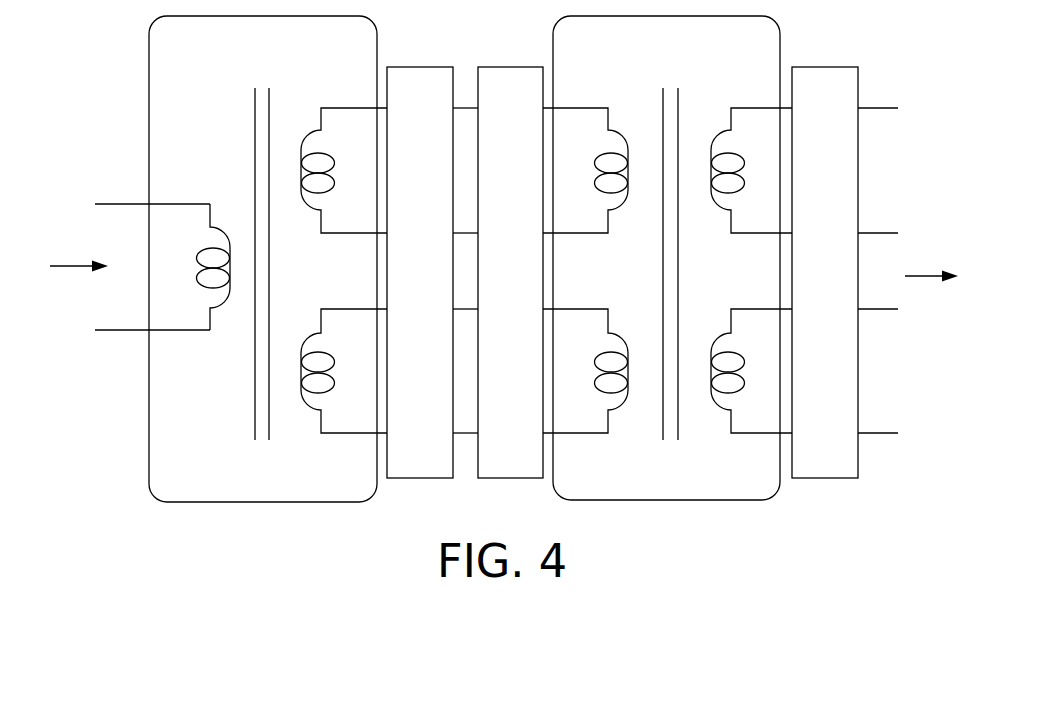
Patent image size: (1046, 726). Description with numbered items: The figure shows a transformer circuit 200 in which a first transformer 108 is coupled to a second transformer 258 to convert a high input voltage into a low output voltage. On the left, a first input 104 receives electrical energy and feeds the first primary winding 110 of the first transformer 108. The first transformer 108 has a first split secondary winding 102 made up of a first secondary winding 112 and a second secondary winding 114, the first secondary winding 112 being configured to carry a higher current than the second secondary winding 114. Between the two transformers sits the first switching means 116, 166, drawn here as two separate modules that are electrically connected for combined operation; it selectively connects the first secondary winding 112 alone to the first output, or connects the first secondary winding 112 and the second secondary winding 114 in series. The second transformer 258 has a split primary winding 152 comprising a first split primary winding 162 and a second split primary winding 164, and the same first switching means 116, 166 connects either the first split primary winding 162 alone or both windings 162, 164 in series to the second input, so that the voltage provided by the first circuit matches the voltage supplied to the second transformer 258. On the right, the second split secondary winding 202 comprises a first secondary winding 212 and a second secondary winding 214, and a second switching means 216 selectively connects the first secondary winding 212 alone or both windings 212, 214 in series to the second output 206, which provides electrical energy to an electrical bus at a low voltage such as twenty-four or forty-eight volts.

The transformer circuit 200 is at (118, 54).
The first split secondary winding 102 is at (300, 90).
The first input 104 is at (68, 263).
The first transformer 108 is at (205, 491).
The first primary winding 110 is at (188, 203).
The first secondary winding 112 is at (329, 155).
The second secondary winding 114 is at (329, 355).
The first switching means 116 is at (440, 99).
The split primary winding 152 is at (632, 105).
The first split primary winding 162 is at (602, 152).
The second split primary winding 164 is at (603, 352).
The first switching means 166 is at (532, 99).
The second split secondary winding 202 is at (712, 100).
The second output 206 is at (930, 273).
The first secondary winding 212 is at (757, 135).
The second secondary winding 214 is at (758, 335).
The second switching means 216 is at (843, 101).
The second transformer 258 is at (612, 490).